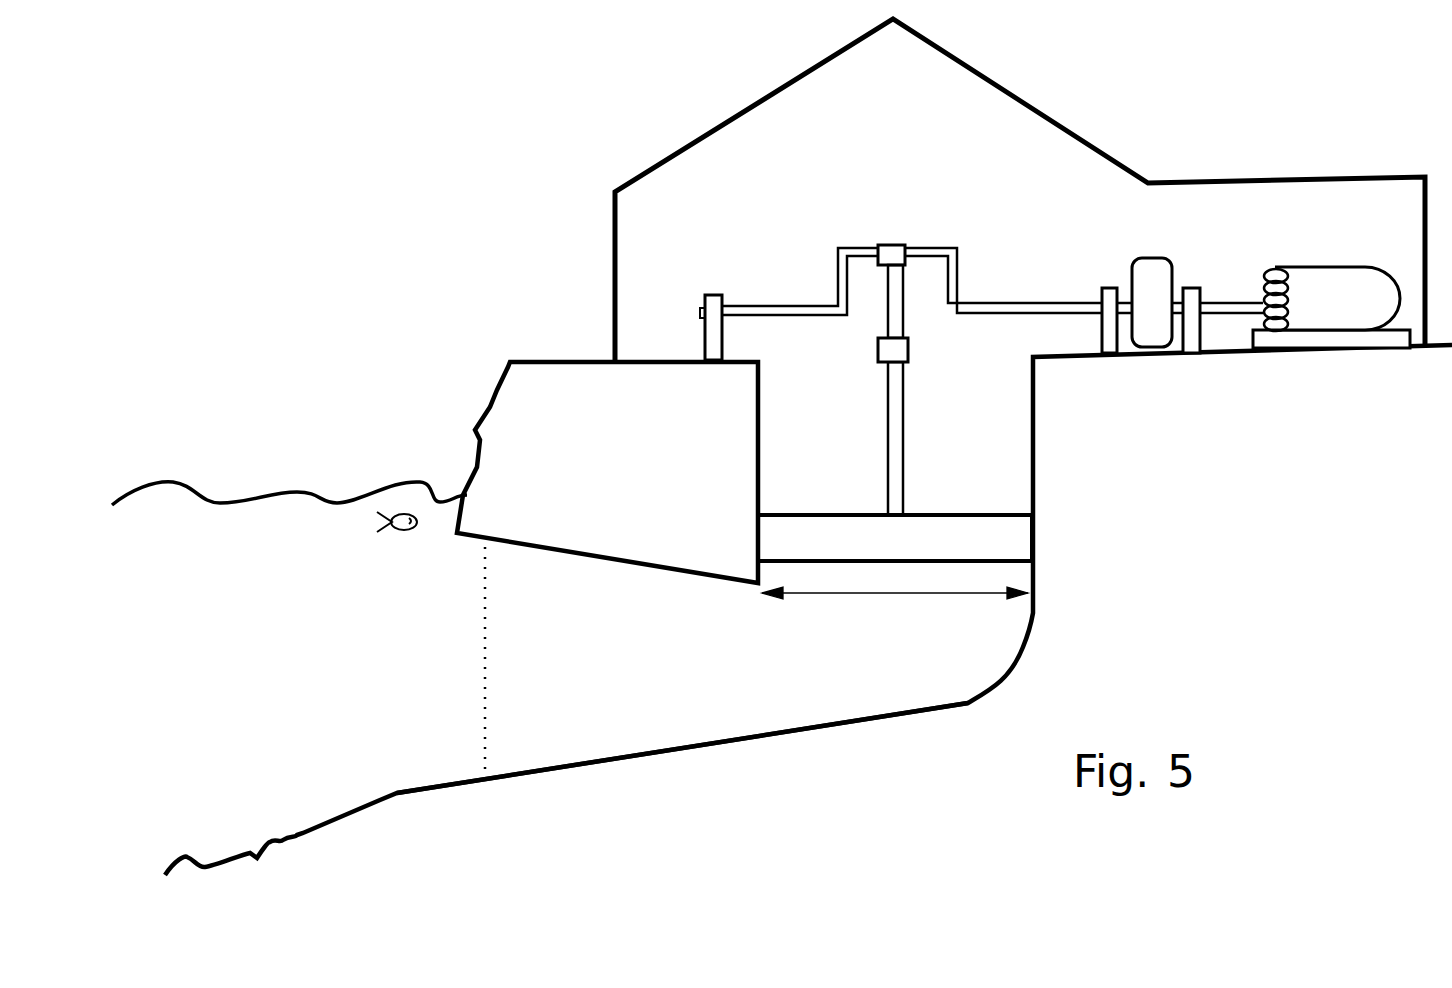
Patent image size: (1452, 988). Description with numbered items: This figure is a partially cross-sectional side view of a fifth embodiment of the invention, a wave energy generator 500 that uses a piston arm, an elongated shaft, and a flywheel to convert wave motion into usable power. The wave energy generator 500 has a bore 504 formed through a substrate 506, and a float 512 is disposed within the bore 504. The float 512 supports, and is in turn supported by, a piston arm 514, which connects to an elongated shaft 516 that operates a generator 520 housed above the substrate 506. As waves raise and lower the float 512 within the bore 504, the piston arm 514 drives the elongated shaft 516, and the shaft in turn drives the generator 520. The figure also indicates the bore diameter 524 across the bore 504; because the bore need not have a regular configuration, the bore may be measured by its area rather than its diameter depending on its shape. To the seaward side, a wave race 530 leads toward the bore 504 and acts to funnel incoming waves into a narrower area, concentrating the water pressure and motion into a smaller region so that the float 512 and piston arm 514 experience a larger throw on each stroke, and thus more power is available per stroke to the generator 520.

The wave energy generator 500 is at (396, 195).
The bore 504 is at (845, 441).
The substrate 506 is at (625, 469).
The float 512 is at (957, 540).
The piston arm 514 is at (890, 243).
The elongated shaft 516 is at (760, 303).
The generator 520 is at (1338, 295).
The bore diameter 524 is at (933, 593).
The wave race 530 is at (650, 755).